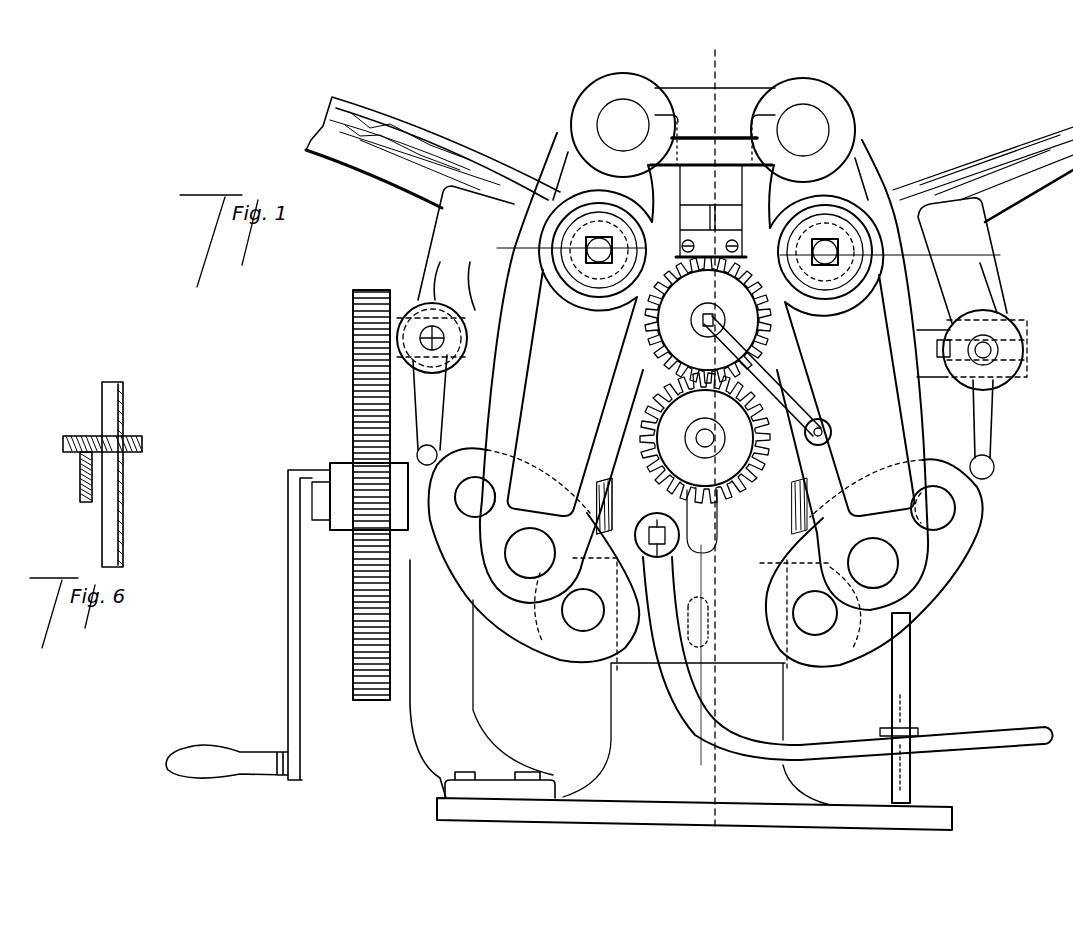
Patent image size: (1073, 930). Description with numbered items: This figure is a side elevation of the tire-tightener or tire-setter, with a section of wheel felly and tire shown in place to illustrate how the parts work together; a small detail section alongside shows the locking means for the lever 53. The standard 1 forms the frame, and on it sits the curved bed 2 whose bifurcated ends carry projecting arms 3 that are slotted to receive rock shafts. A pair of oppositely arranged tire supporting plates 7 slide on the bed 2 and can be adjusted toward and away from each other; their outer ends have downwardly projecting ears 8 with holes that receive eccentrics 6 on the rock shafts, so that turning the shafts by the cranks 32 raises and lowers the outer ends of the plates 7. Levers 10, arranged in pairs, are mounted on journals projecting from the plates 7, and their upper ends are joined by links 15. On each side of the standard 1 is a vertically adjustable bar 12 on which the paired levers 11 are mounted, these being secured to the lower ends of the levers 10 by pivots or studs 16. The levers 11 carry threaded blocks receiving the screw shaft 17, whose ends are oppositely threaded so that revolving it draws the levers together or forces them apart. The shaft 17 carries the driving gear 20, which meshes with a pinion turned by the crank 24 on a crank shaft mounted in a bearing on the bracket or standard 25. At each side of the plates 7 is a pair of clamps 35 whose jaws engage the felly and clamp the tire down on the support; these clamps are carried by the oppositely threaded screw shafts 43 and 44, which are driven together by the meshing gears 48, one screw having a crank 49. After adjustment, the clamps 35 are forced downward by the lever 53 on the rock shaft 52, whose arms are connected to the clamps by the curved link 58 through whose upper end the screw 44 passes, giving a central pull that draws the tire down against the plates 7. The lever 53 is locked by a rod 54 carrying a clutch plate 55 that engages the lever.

In FIG. 1, the standard 1 is at (735, 716).
In FIG. 1, the curved bed 2 is at (717, 58).
In FIG. 1, the projecting arms 3 is at (937, 365).
In FIG. 1, the eccentrics 6 is at (920, 790).
In FIG. 1, the tire supporting plates 7 is at (975, 243).
In FIG. 1, the ears 8 is at (1025, 350).
In FIG. 1, the levers 10 is at (878, 170).
In FIG. 1, the levers 11 is at (975, 600).
In FIG. 1, the vertically adjustable bar 12 is at (722, 668).
In FIG. 1, the links 15 is at (745, 100).
In FIG. 1, the pivots or studs 16 is at (965, 555).
In FIG. 1, the screw shaft 17 is at (618, 505).
In FIG. 1, the driving gear 20 is at (360, 495).
In FIG. 1, the crank 24 is at (288, 585).
In FIG. 1, the bracket or standard 25 is at (416, 705).
In FIG. 1, the cranks 32 is at (448, 378).
In FIG. 1, the clamps 35 is at (712, 215).
In FIG. 1, the screw shaft 43 is at (707, 312).
In FIG. 1, the screw shaft 44 is at (700, 432).
In FIG. 1, the gears 48 is at (750, 480).
In FIG. 1, the crank 49 is at (818, 418).
In FIG. 1, the rock shaft 52 is at (663, 522).
In FIG. 1, the lever 53 is at (832, 750).
In FIG. 6, the lever 53 is at (80, 484).
In FIG. 1, the rod 54 is at (910, 670).
In FIG. 6, the rod 54 is at (118, 408).
In FIG. 1, the clutch plate 55 is at (918, 732).
In FIG. 6, the clutch plate 55 is at (95, 440).
In FIG. 1, the link 58 is at (722, 512).